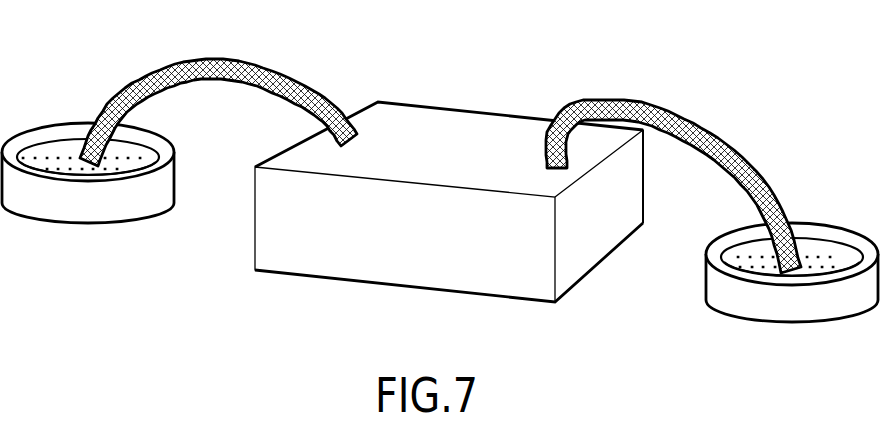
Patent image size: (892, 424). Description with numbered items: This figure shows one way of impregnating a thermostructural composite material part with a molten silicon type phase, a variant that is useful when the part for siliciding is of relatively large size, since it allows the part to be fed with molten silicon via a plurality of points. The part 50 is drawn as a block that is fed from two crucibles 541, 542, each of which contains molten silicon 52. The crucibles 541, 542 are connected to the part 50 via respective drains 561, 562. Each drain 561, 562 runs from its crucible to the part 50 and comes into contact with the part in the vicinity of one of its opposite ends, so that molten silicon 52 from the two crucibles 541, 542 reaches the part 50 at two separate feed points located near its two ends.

The part 50 is at (405, 276).
The molten silicon 52 is at (58, 155).
The crucible 541 is at (128, 208).
The crucible 542 is at (747, 313).
The drain 561 is at (220, 61).
The drain 562 is at (683, 121).